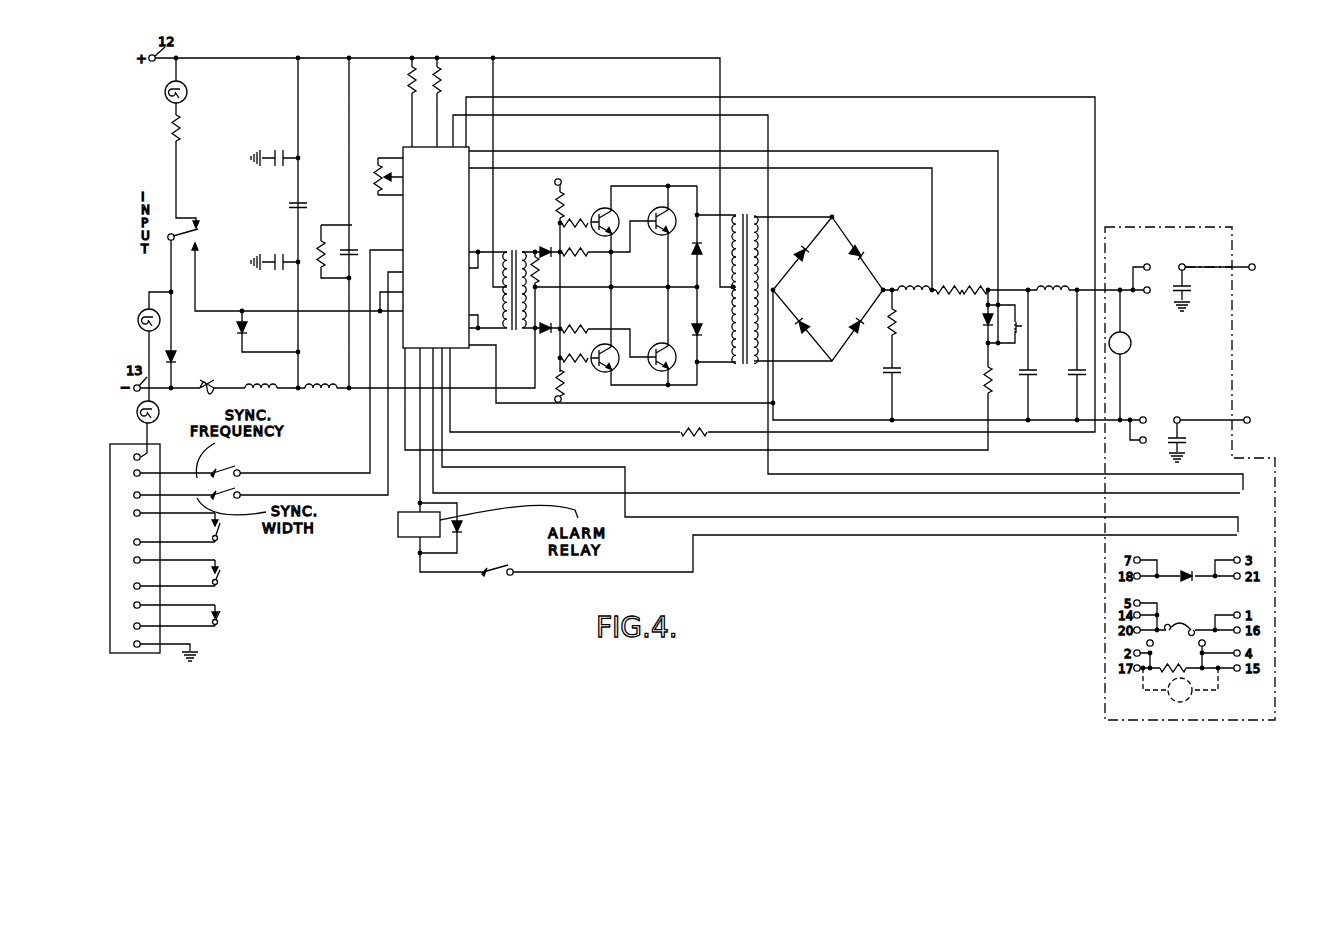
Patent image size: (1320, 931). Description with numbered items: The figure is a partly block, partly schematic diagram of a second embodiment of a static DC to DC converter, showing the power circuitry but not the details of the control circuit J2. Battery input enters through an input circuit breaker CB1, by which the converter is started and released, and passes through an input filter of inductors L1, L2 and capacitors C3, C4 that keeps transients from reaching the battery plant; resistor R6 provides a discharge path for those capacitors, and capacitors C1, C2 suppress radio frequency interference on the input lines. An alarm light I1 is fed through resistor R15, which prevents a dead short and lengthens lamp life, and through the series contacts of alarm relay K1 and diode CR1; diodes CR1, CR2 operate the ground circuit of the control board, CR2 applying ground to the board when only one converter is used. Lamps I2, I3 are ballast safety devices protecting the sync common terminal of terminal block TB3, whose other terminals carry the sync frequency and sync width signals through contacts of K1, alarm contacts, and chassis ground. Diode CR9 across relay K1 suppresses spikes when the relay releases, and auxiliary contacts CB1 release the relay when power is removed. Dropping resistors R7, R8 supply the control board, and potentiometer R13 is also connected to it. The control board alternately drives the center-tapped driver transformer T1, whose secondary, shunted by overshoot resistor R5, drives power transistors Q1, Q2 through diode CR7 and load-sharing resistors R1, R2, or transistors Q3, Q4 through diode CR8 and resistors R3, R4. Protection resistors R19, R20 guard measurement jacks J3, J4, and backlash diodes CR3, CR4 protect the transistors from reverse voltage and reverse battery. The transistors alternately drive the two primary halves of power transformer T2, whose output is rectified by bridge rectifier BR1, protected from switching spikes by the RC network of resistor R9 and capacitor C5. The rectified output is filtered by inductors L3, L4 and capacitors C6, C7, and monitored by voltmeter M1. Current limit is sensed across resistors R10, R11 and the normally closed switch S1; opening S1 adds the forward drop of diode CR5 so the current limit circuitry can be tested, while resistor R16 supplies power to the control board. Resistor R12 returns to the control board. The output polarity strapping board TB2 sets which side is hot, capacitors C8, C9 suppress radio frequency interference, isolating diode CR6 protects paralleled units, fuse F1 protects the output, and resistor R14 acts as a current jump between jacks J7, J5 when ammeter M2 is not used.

The alarm light I1 is at (186, 92).
The lamp I2 is at (156, 412).
The lamp I3 is at (139, 320).
The resistor R15 is at (191, 139).
The alarm relay K1 is at (290, 427).
The diode CR1 is at (184, 349).
The input circuit breaker CB1 is at (354, 480).
The inductor L1 is at (261, 377).
The inductor L2 is at (321, 377).
The diode CR2 is at (267, 331).
The capacitor C1 is at (274, 148).
The capacitor C2 is at (274, 253).
The capacitor C3 is at (291, 202).
The capacitor C4 is at (356, 243).
The resistor R6 is at (326, 251).
The dropping resistor R7 is at (400, 81).
The dropping resistor R8 is at (447, 81).
The potentiometer R13 is at (378, 176).
The control circuit J2 is at (445, 244).
The driver transformer T1 is at (512, 281).
The diode CR7 is at (547, 244).
The diode CR8 is at (551, 320).
The resistor R5 is at (544, 270).
The resistor R1 is at (578, 243).
The resistor R2 is at (575, 214).
The resistor R3 is at (580, 320).
The resistor R4 is at (575, 349).
The protection resistor R19 is at (546, 205).
The protection resistor R20 is at (574, 383).
The jack J3 is at (565, 177).
The jack J4 is at (566, 399).
The power transistor Q1 is at (658, 213).
The power transistor Q2 is at (604, 214).
The power transistor Q3 is at (658, 351).
The power transistor Q4 is at (611, 364).
The backlash diode CR3 is at (686, 254).
The backlash diode CR4 is at (686, 324).
The power transformer T2 is at (745, 281).
The bridge rectifier BR1 is at (828, 289).
The inductor L3 is at (914, 279).
The resistor R10 is at (949, 281).
The resistor R11 is at (977, 281).
The resistor R9 is at (902, 322).
The capacitor C5 is at (881, 370).
The diode CR5 is at (973, 321).
The switch S1 is at (1026, 321).
The resistor R16 is at (971, 380).
The capacitor C6 is at (1034, 363).
The capacitor C7 is at (1072, 363).
The inductor L4 is at (1053, 279).
The voltmeter M1 is at (1131, 343).
The output polarity strapping board TB2 is at (1180, 216).
The capacitor C8 is at (1191, 288).
The capacitor C9 is at (1187, 442).
The resistor R12 is at (695, 424).
The diode CR9 is at (454, 528).
The terminal block TB3 is at (140, 656).
The output isolating diode CR6 is at (1185, 567).
The fuse F1 is at (1180, 622).
The current jump R14 is at (1177, 660).
The test jack J7 is at (1145, 640).
The test jack J5 is at (1208, 640).
The ammeter M2 is at (1186, 694).